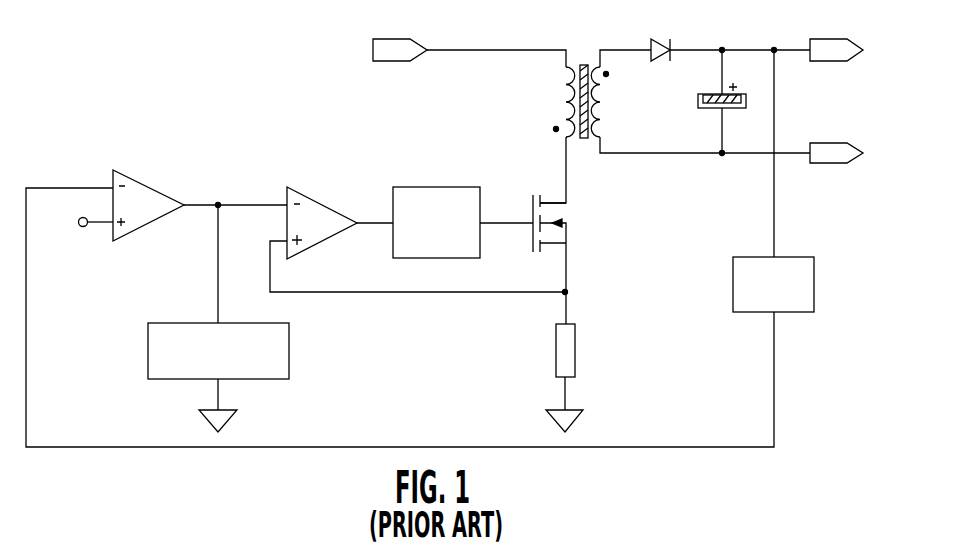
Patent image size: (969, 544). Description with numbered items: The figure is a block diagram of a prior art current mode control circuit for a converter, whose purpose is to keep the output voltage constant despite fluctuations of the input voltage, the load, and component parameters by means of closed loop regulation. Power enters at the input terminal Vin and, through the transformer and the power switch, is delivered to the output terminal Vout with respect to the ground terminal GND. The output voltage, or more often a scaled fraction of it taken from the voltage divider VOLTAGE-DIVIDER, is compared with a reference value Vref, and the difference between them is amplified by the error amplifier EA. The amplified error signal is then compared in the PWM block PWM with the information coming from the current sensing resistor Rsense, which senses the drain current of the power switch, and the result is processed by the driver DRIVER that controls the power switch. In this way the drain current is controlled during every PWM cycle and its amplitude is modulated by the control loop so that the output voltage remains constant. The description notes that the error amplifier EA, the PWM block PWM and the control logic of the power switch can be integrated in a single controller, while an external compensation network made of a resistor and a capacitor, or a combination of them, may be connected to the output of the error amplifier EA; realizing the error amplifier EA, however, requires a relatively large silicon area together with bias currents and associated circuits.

The input voltage terminal Vin is at (400, 37).
The output voltage terminal Vout is at (836, 38).
The ground terminal GND is at (836, 167).
The reference value Vref is at (76, 221).
The error amplifier EA is at (148, 205).
The PWM block PWM is at (325, 228).
The driver DRIVER is at (436, 222).
The current sensing resistor Rsense is at (597, 350).
The voltage divider VOLTAGE-DIVIDER is at (773, 284).